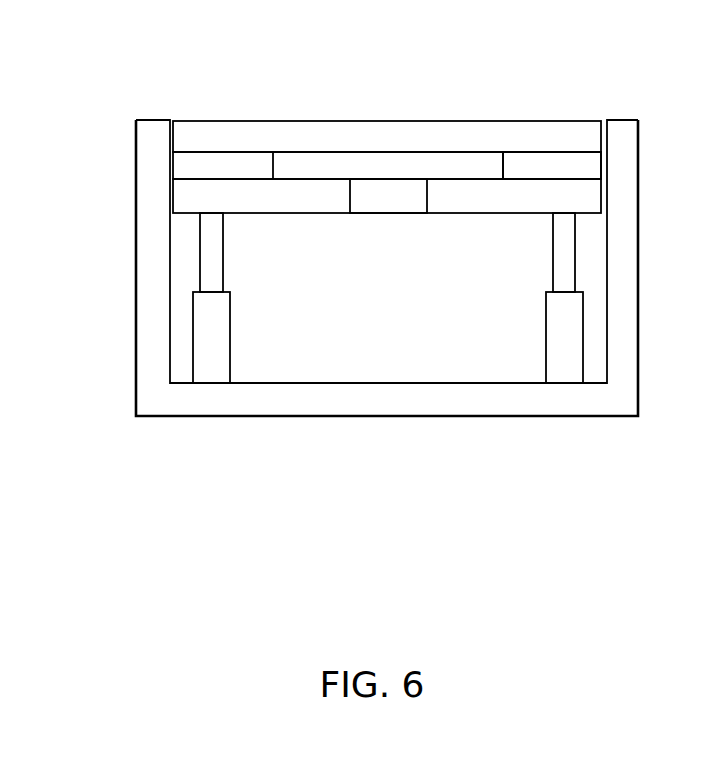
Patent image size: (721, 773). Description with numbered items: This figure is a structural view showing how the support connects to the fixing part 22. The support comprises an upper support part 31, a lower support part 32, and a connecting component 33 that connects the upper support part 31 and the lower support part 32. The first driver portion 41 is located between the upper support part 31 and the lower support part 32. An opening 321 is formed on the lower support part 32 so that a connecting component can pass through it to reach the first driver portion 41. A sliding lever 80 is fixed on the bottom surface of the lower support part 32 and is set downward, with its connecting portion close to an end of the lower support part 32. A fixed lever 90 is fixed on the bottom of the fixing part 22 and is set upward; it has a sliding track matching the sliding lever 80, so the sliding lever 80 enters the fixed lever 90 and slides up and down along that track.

The fixing part 22 is at (358, 400).
The upper support part 31 is at (356, 134).
The first driver portion 41 is at (437, 168).
The connecting component 33 is at (545, 170).
The lower support part 32 is at (315, 200).
The opening 321 is at (397, 212).
The sliding lever 80 is at (213, 243).
The fixed lever 90 is at (213, 368).